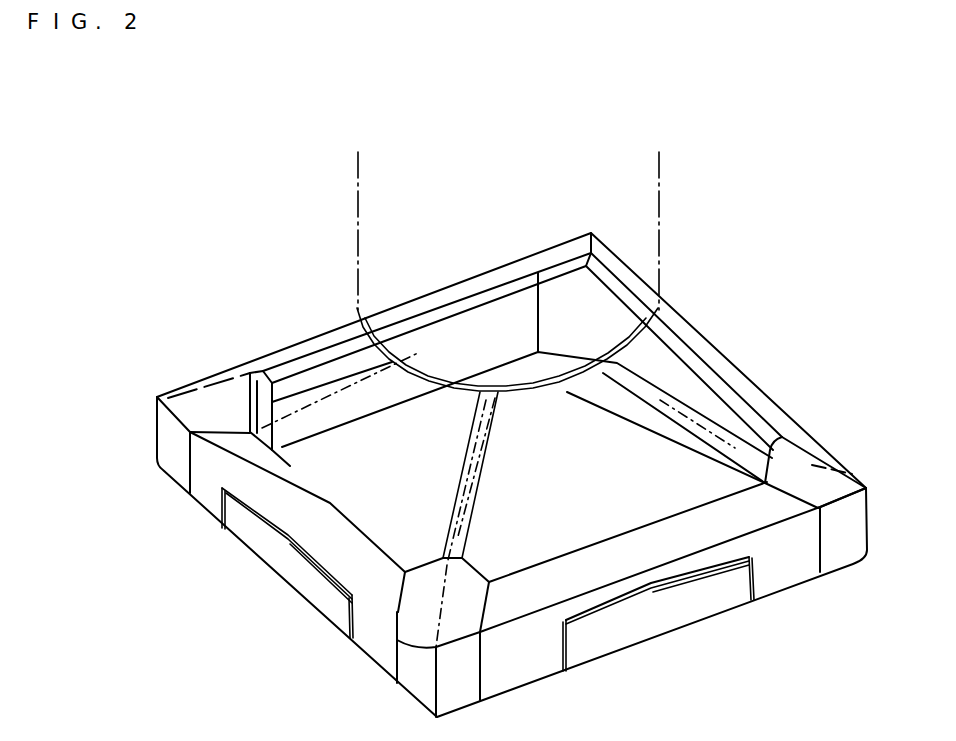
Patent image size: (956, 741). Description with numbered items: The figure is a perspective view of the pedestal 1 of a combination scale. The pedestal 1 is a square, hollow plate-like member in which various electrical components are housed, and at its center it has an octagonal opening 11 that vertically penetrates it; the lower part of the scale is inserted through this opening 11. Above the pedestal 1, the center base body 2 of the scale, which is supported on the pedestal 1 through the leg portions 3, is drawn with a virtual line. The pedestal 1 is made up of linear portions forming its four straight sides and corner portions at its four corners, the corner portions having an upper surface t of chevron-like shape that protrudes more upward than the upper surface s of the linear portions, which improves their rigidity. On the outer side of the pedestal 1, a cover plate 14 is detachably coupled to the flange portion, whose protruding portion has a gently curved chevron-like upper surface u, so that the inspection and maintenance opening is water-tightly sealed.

The pedestal 1 is at (730, 349).
The center base body 2 is at (665, 228).
The leg portions 3 is at (477, 503).
The octagonal opening 11 is at (400, 440).
The cover plate 14 is at (272, 562).
The upper surface of the linear portion s is at (468, 290).
The upper surface of the corner portion t is at (205, 380).
The upper surface of the protruding portion u is at (310, 552).